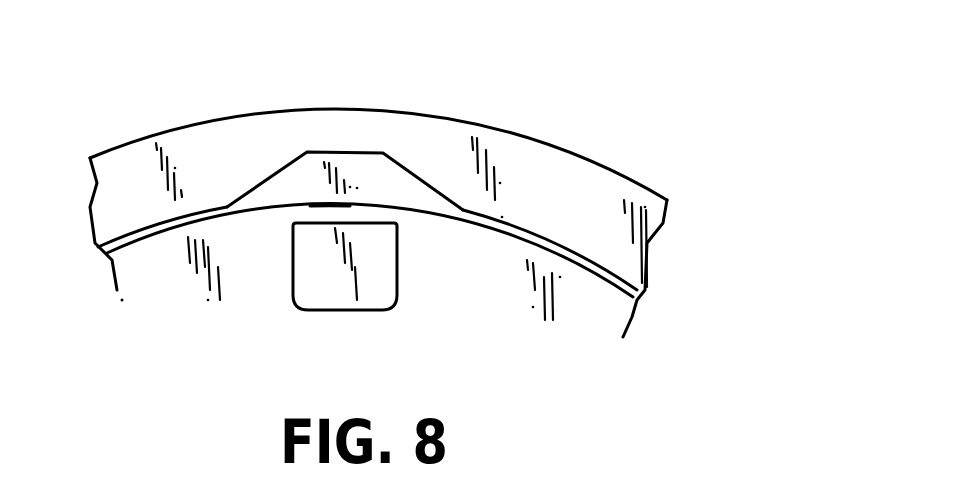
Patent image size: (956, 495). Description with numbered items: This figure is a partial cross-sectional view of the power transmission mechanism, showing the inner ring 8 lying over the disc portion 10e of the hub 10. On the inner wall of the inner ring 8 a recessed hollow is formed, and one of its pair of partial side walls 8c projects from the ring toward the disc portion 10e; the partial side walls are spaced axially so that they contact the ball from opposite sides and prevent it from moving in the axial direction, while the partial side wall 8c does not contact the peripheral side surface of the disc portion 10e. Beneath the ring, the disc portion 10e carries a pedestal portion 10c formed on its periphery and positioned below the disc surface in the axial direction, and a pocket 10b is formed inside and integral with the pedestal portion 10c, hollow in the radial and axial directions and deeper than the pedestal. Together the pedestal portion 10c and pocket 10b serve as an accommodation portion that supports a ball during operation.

The inner ring 8 is at (549, 135).
The partial side wall 8c is at (340, 151).
The hub 10 is at (468, 250).
The disc portion 10e is at (612, 273).
The pocket 10b is at (373, 288).
The pedestal portion 10c is at (330, 213).